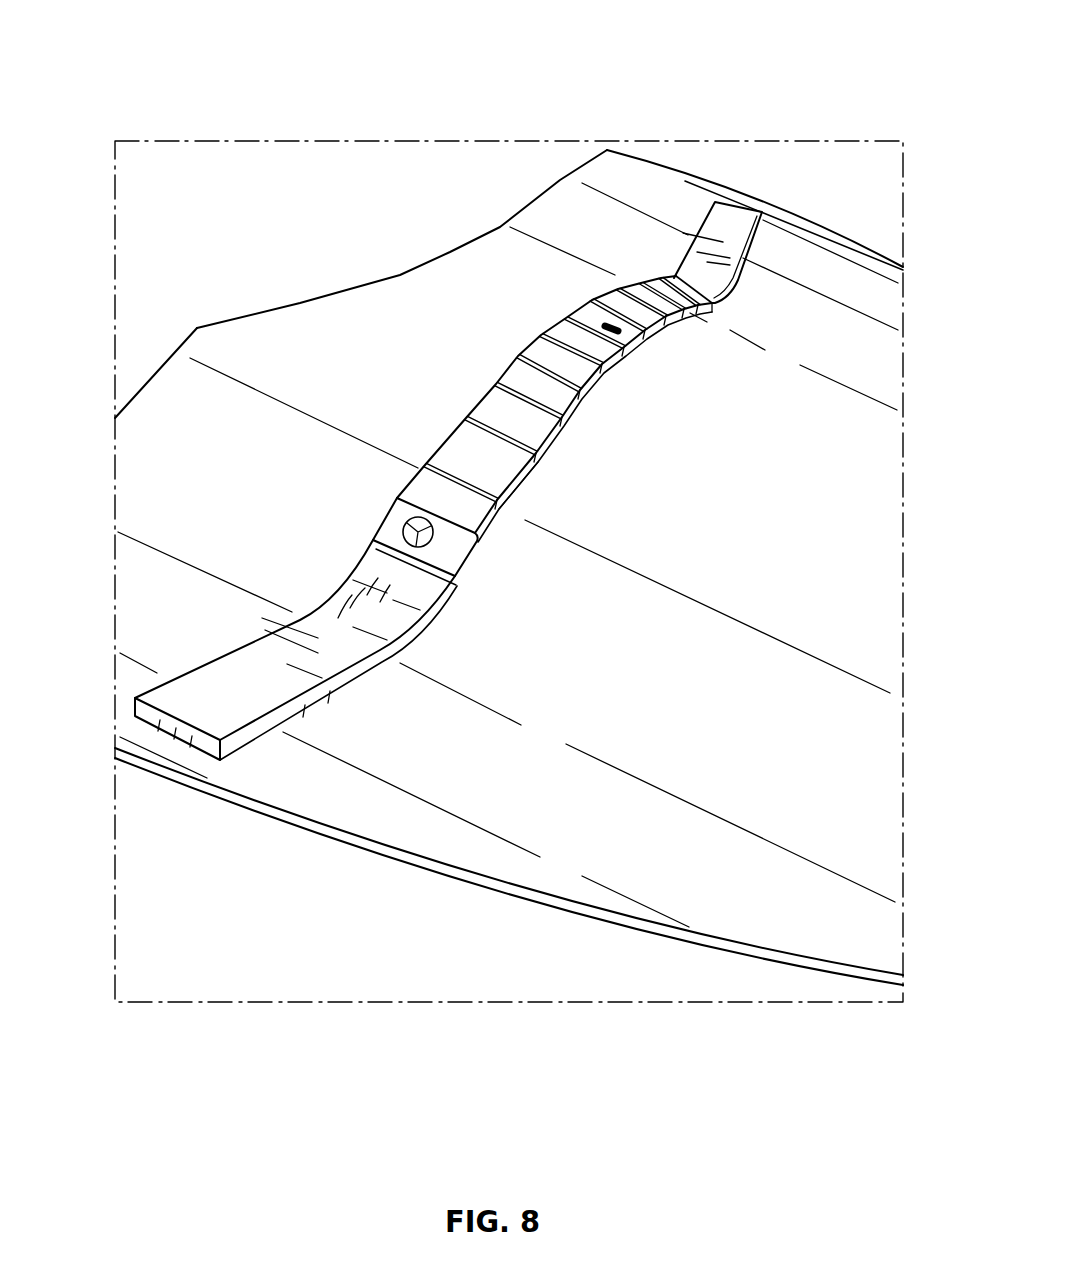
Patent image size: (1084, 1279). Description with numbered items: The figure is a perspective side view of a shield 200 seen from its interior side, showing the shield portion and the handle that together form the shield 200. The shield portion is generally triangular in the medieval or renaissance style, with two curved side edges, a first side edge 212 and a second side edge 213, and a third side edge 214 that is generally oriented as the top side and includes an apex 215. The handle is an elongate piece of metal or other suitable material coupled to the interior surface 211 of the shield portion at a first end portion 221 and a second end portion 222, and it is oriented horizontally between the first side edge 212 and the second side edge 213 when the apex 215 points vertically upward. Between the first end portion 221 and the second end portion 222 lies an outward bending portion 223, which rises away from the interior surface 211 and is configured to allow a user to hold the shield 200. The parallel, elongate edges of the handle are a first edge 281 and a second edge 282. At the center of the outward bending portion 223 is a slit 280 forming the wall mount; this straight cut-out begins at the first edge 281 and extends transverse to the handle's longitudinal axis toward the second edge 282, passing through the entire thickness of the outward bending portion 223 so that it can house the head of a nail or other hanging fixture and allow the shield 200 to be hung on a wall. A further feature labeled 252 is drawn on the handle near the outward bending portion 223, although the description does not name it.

The shield 200 is at (230, 247).
The interior surface 211 is at (844, 762).
The first side edge 212 is at (335, 842).
The second side edge 213 is at (658, 166).
The third side edge 214 is at (476, 238).
The apex 215 is at (198, 328).
The first end portion 221 is at (735, 222).
The second end portion 222 is at (260, 666).
The outward bending portion 223 is at (713, 304).
The mounting hole plate 252 is at (408, 526).
The slit 280 is at (634, 349).
The first edge 281 is at (556, 440).
The second edge 282 is at (477, 411).